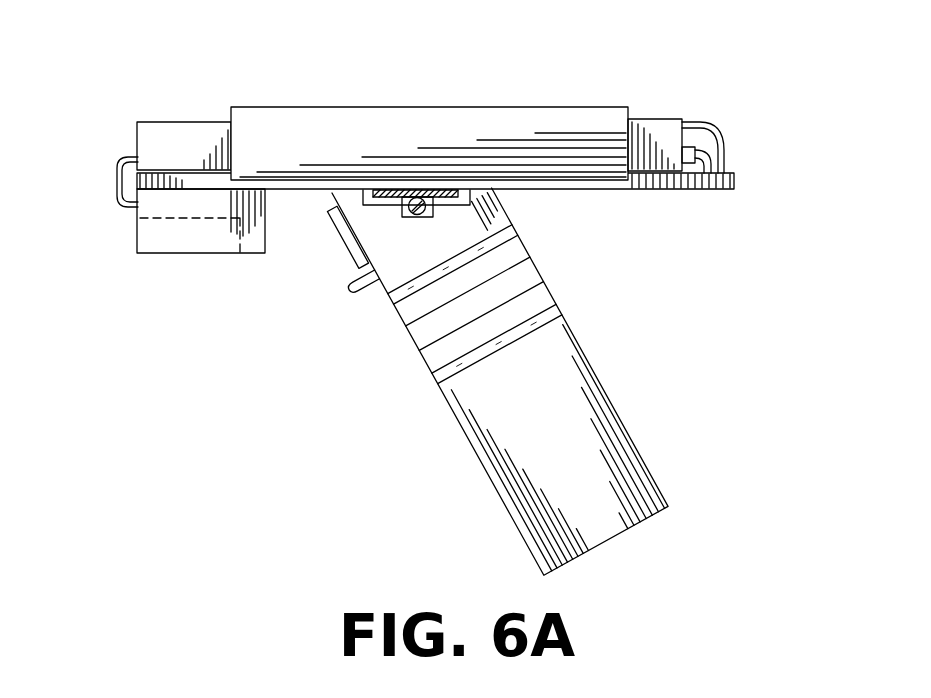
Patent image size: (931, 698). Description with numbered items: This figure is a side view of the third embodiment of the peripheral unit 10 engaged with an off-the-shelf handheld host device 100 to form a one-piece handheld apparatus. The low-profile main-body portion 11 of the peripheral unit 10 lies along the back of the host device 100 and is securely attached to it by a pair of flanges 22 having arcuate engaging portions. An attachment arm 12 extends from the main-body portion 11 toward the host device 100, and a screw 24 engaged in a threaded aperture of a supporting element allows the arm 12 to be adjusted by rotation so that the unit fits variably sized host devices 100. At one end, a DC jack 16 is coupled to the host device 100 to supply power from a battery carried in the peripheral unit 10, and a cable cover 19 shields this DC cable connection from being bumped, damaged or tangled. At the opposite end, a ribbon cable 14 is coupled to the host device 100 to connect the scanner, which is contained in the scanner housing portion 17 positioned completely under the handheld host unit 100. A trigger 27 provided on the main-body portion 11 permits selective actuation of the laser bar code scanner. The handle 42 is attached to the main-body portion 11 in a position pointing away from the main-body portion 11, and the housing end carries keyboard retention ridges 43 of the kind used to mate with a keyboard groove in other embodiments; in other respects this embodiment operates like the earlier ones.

The peripheral unit 10 is at (403, 340).
The host device 100 is at (519, 135).
The main-body portion 11 is at (708, 188).
The attachment arm 12 is at (380, 190).
The ribbon cable 14 is at (117, 170).
The DC jack 16 is at (705, 157).
The scanner housing portion 17 is at (200, 243).
The cable cover 19 is at (698, 122).
The flange 22 is at (518, 105).
The screw 24 is at (420, 217).
The trigger 27 is at (350, 246).
The handle 42 is at (570, 378).
The keyboard retention ridge 43 is at (518, 277).